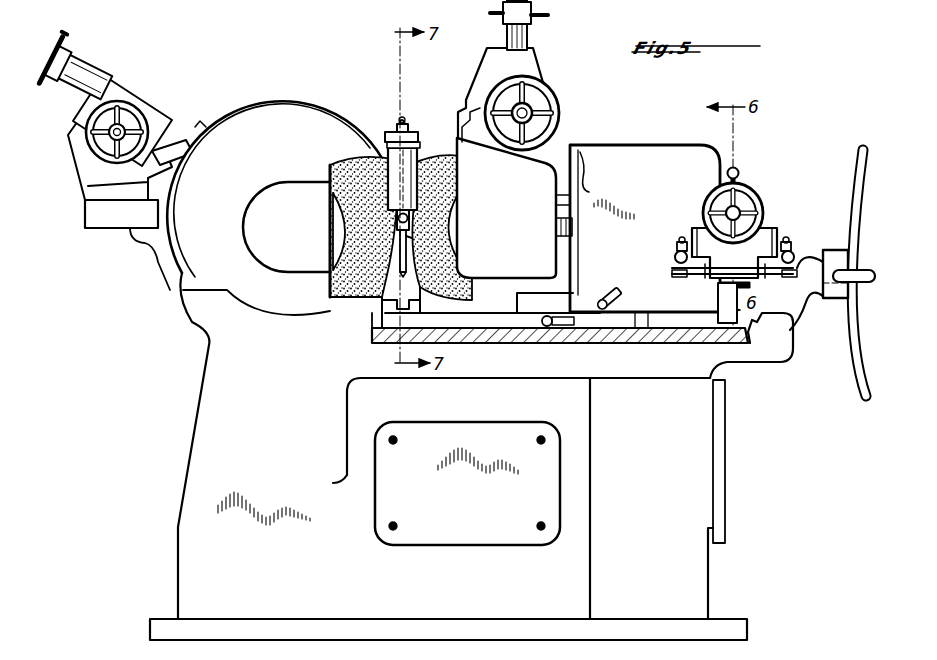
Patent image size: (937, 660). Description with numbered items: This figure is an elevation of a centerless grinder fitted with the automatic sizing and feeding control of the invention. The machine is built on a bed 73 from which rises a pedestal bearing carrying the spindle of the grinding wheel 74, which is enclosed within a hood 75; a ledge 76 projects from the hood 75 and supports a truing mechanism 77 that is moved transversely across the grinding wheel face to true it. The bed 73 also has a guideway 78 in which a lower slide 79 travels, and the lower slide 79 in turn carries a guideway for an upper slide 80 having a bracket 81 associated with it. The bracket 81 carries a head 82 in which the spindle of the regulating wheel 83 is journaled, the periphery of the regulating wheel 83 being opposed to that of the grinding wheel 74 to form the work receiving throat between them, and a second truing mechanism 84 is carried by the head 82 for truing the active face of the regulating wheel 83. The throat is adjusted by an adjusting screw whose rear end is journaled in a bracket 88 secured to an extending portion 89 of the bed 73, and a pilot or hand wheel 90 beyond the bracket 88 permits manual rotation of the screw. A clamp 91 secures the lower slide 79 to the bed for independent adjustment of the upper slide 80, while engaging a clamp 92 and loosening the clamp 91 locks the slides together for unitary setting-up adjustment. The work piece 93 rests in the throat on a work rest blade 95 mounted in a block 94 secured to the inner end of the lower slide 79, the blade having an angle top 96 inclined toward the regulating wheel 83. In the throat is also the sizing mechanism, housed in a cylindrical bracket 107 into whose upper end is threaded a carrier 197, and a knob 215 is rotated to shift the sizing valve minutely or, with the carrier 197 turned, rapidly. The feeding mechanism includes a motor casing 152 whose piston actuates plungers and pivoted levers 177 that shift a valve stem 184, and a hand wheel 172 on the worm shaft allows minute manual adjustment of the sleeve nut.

The bed 73 is at (700, 579).
The grinding wheel 74 is at (350, 288).
The hood 75 is at (264, 113).
The ledge 76 is at (125, 222).
The truing mechanism 77 is at (115, 90).
The guideway 78 is at (644, 318).
The lower slide 79 is at (637, 318).
The upper slide 80 is at (573, 330).
The bracket 81 is at (672, 152).
The head 82 is at (556, 170).
The regulating wheel 83 is at (497, 290).
The truing mechanism 84 is at (535, 76).
The bracket 88 is at (803, 312).
The extending portion 89 is at (775, 352).
The hand wheel 90 is at (866, 380).
The clamp 91 is at (552, 326).
The clamp 92 is at (614, 302).
The work piece 93 is at (415, 208).
The block 94 is at (378, 298).
The work rest blade 95 is at (412, 260).
The angle top 96 is at (410, 244).
The cylindrical bracket 107 is at (388, 162).
The motor casing 152 is at (762, 232).
The hand wheel 172 is at (752, 198).
The levers 177 is at (797, 248).
The valve stem 184 is at (706, 270).
The carrier 197 is at (415, 140).
The knob 215 is at (400, 124).